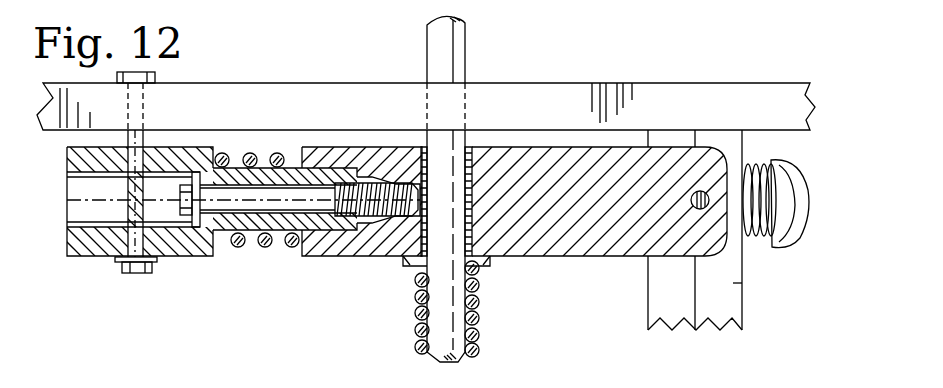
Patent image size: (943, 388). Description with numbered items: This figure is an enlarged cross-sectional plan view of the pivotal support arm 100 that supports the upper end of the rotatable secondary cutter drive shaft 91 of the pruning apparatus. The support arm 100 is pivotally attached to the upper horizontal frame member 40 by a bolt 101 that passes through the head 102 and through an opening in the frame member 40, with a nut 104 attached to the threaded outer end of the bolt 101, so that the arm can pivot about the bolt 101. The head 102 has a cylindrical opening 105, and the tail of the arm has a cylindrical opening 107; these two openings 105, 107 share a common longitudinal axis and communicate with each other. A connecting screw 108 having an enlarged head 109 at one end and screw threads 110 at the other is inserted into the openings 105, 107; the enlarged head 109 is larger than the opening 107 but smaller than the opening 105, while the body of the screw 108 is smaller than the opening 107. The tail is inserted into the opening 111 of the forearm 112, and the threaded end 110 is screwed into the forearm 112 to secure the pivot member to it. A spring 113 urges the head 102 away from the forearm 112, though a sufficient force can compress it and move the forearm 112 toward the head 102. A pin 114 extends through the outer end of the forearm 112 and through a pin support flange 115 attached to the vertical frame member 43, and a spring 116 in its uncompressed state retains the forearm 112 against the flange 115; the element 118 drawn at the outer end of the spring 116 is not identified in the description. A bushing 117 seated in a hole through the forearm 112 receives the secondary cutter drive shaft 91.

The upper horizontal frame member 40 is at (526, 120).
The second vertical frame member 43 is at (647, 300).
The secondary cutter drive shaft 91 is at (468, 63).
The pivotal support arm 100 is at (303, 308).
The bolt 101 is at (120, 205).
The head 102 is at (95, 257).
The nut 104 is at (160, 77).
The cylindrical opening 105 is at (100, 172).
The cylindrical opening 107 is at (232, 214).
The connecting screw 108 is at (265, 197).
The enlarged head 109 is at (190, 175).
The screw threads 110 is at (358, 190).
The opening 111 is at (362, 228).
The forearm 112 is at (567, 257).
The spring 113 is at (243, 249).
The pin 114 is at (699, 190).
The pin support flange 115 is at (744, 283).
The spring 116 is at (764, 160).
The bushing 117 is at (487, 268).
The spring cap 118 is at (787, 250).